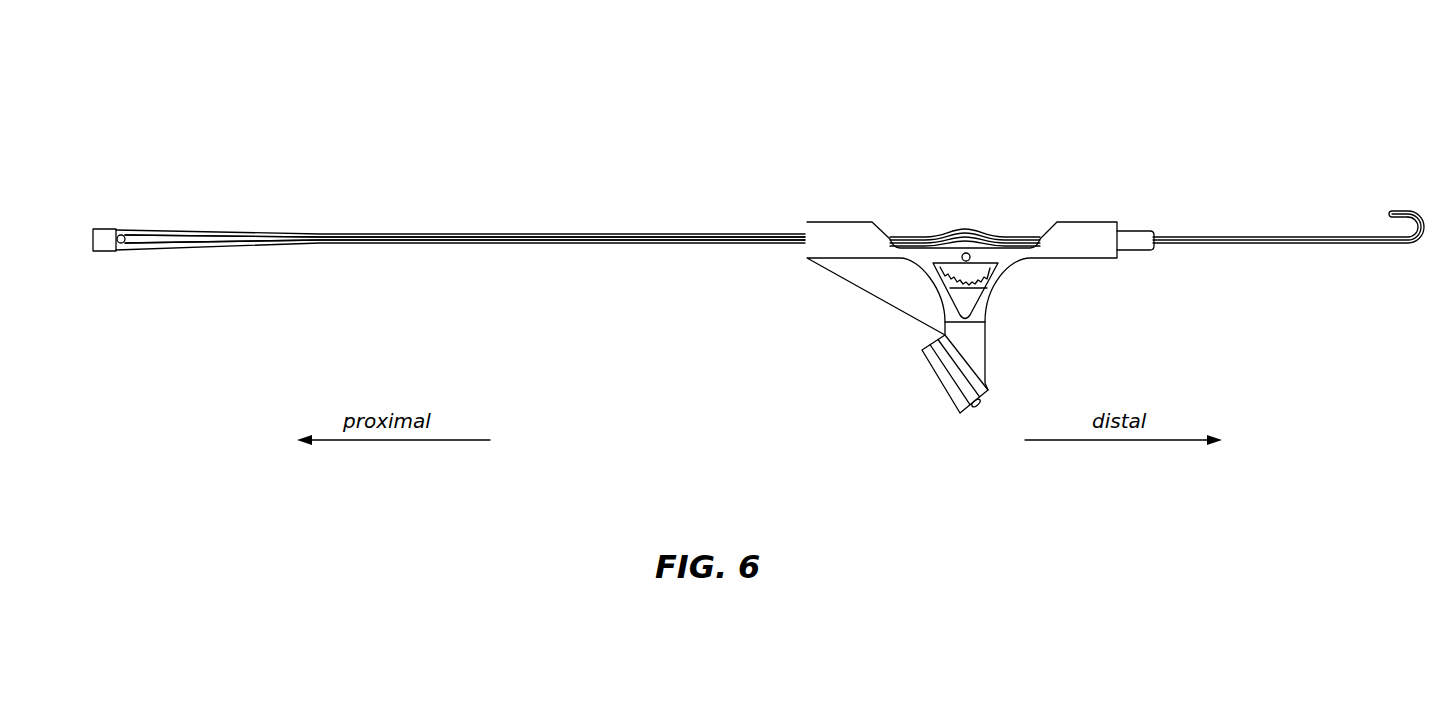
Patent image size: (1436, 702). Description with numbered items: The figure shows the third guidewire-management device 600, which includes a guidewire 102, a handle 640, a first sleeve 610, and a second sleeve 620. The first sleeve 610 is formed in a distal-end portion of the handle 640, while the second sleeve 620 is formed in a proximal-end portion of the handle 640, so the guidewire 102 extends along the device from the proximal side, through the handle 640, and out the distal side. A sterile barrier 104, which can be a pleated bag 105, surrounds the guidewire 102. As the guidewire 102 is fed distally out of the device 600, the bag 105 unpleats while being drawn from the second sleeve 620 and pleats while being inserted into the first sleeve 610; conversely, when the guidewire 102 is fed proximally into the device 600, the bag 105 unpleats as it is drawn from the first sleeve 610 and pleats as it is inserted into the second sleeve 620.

The third guidewire-management device 600 is at (663, 133).
The guidewire 102 is at (195, 236).
The sterile barrier 104 is at (321, 233).
The pleated bag 105 is at (465, 195).
The second sleeve 620 is at (847, 277).
The handle 640 is at (970, 427).
The first sleeve 610 is at (1188, 277).